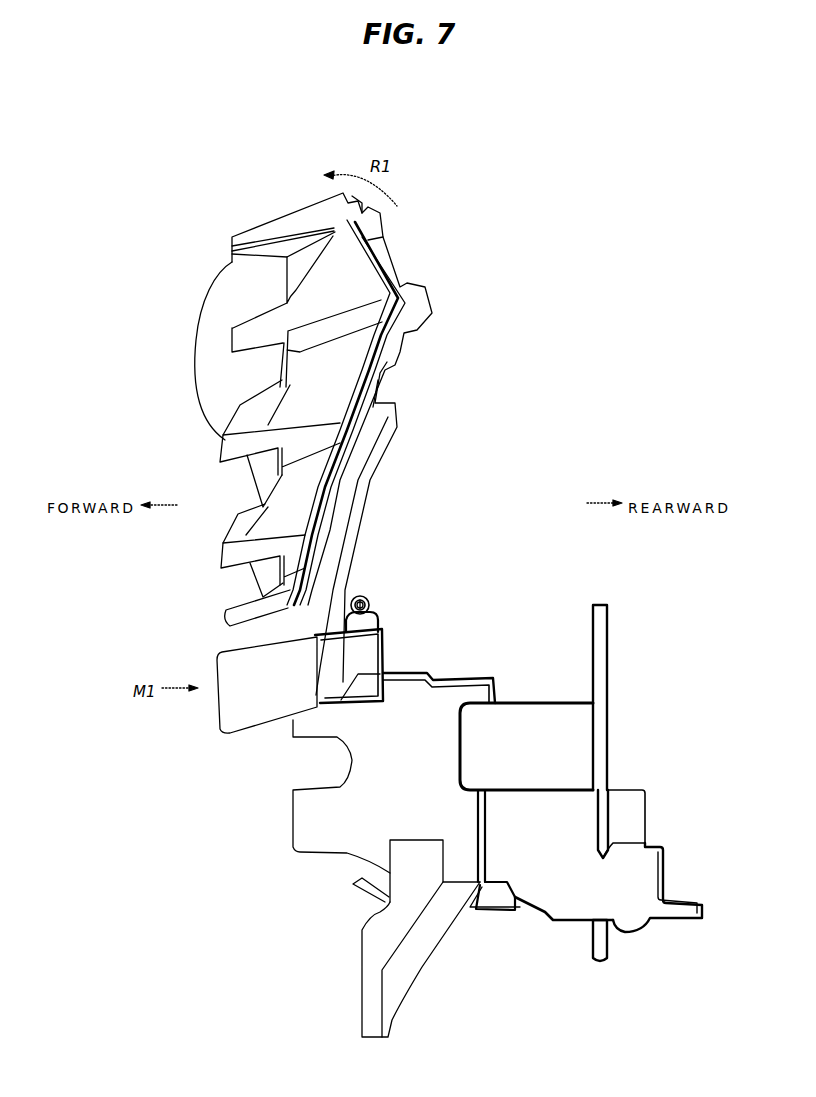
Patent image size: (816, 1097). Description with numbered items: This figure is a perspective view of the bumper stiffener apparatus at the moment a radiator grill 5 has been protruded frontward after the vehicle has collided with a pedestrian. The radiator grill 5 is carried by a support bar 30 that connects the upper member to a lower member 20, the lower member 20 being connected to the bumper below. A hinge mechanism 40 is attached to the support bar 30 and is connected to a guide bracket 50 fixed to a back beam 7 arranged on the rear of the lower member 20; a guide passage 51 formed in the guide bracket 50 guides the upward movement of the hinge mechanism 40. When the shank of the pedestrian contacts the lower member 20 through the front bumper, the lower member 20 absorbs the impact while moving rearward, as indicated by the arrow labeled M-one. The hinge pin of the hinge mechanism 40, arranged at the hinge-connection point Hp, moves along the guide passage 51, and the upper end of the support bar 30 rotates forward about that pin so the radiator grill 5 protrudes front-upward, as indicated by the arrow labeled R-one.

The radiator grill 5 is at (258, 332).
The support bar 30 is at (380, 468).
The hinge-connection point Hp is at (363, 600).
The hinge mechanism 40 is at (370, 600).
The guide passage 51 is at (380, 622).
The guide bracket 50 is at (388, 654).
The lower member 20 is at (237, 695).
The back beam 7 is at (312, 831).